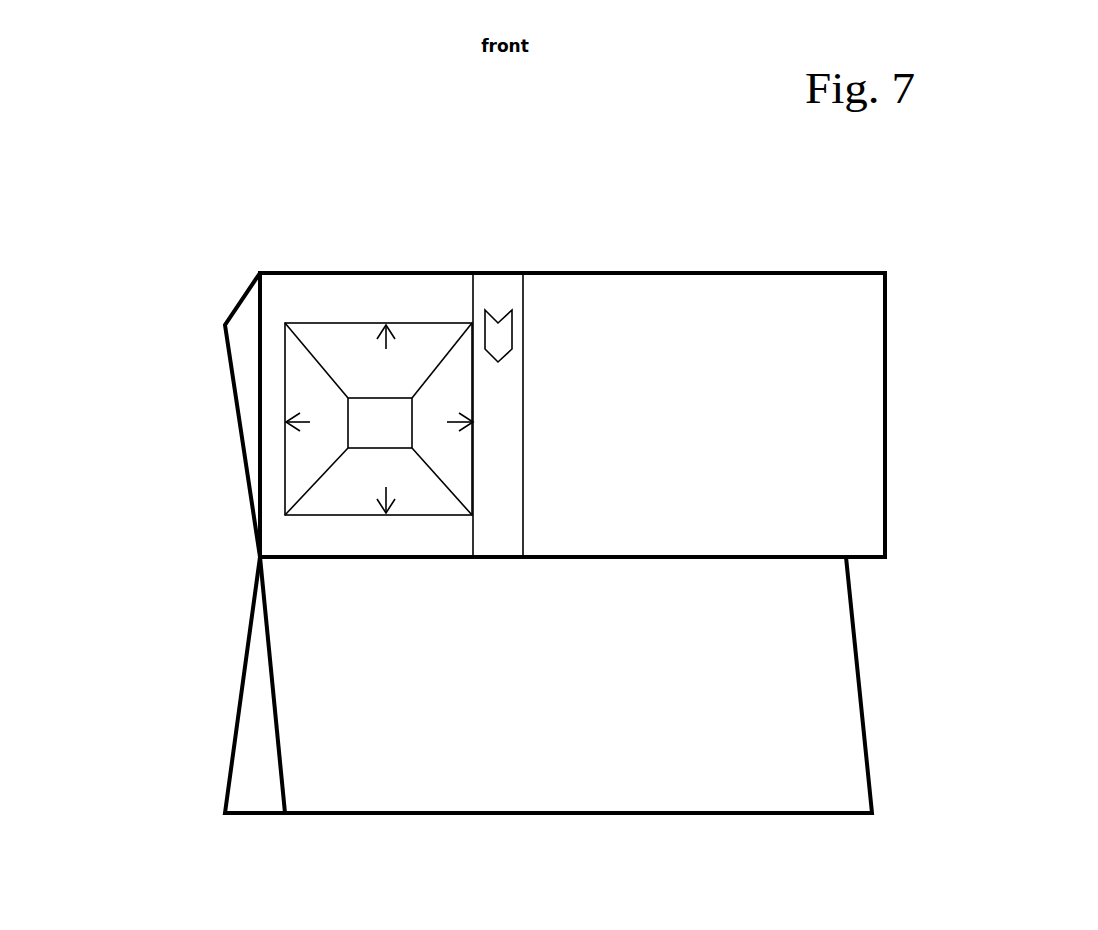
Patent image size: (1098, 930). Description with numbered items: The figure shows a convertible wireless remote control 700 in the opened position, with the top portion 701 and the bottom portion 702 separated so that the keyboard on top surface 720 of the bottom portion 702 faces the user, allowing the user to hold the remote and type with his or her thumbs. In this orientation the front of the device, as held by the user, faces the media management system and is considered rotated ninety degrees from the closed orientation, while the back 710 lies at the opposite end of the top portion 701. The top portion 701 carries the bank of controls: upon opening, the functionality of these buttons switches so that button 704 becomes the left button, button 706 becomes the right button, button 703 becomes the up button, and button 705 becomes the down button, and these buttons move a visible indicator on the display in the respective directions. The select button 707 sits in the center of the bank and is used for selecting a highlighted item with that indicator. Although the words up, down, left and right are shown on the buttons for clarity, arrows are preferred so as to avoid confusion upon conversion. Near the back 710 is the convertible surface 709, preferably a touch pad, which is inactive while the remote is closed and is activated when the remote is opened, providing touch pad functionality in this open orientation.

The convertible wireless remote control 700 is at (402, 180).
The top portion 701 is at (648, 348).
The bottom portion 702 is at (748, 610).
The up button 703 is at (373, 362).
The left button 704 is at (312, 400).
The down button 705 is at (348, 485).
The right button 706 is at (448, 448).
The select button 707 is at (403, 417).
The convertible surface 709 is at (748, 348).
The back 710 is at (922, 415).
The top surface 720 is at (548, 685).